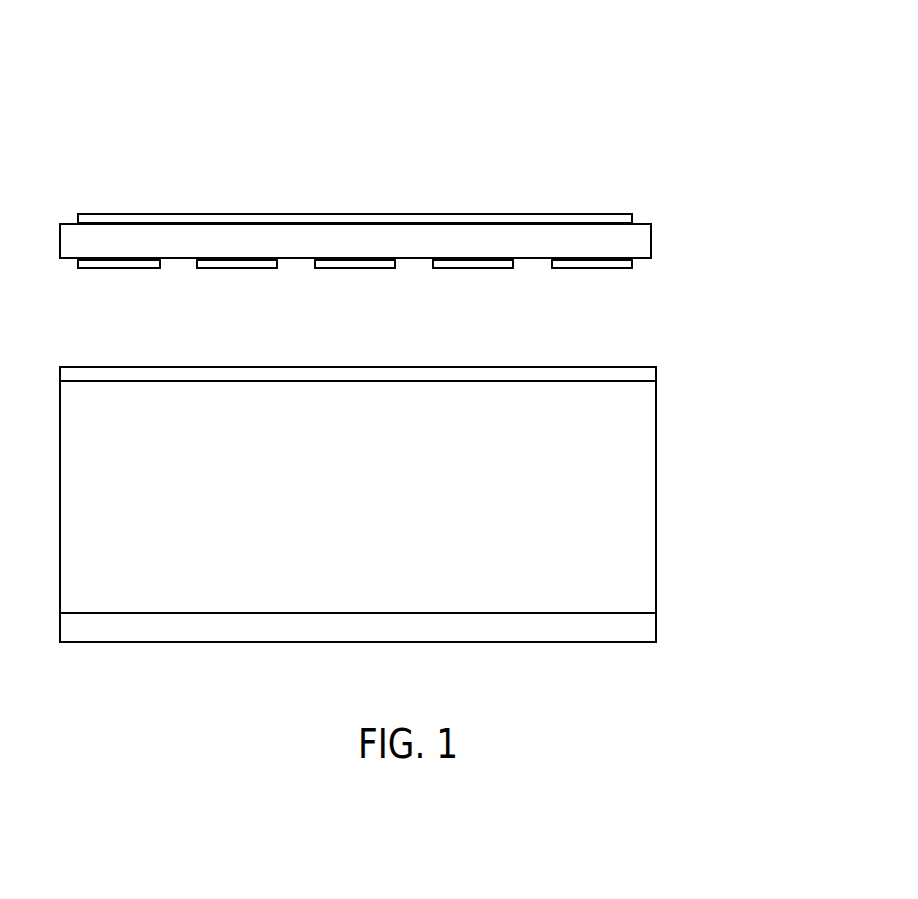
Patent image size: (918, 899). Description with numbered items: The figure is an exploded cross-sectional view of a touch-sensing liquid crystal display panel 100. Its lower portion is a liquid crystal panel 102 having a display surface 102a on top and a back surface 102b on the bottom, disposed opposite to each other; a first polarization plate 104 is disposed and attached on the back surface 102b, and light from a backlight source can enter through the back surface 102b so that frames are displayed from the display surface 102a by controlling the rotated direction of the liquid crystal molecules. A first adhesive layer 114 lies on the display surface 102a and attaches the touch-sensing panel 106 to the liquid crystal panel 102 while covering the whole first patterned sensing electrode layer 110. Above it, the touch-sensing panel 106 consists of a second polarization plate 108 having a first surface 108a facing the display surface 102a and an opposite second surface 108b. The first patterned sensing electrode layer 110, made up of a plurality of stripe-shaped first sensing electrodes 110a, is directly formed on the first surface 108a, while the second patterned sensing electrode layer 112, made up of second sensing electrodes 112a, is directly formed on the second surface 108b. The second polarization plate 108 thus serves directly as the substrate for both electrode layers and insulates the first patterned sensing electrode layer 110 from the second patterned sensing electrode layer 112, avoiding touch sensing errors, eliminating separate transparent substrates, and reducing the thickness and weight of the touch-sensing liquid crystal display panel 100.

The touch-sensing liquid crystal display panel 100 is at (663, 72).
The liquid crystal panel 102 is at (628, 518).
The display surface 102a is at (637, 380).
The back surface 102b is at (633, 615).
The first polarization plate 104 is at (647, 630).
The touch-sensing panel 106 is at (720, 194).
The second polarization plate 108 is at (628, 250).
The first surface 108a is at (643, 262).
The second surface 108b is at (643, 222).
The first patterned sensing electrode layer 110 is at (64, 277).
The first sensing electrodes 110a is at (122, 268).
The second patterned sensing electrode layer 112 is at (64, 207).
The second sensing electrodes 112a is at (353, 220).
The first adhesive layer 114 is at (653, 372).